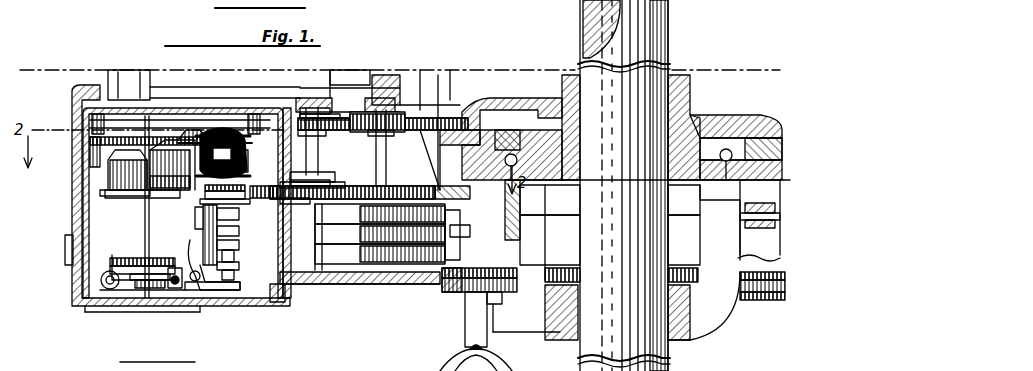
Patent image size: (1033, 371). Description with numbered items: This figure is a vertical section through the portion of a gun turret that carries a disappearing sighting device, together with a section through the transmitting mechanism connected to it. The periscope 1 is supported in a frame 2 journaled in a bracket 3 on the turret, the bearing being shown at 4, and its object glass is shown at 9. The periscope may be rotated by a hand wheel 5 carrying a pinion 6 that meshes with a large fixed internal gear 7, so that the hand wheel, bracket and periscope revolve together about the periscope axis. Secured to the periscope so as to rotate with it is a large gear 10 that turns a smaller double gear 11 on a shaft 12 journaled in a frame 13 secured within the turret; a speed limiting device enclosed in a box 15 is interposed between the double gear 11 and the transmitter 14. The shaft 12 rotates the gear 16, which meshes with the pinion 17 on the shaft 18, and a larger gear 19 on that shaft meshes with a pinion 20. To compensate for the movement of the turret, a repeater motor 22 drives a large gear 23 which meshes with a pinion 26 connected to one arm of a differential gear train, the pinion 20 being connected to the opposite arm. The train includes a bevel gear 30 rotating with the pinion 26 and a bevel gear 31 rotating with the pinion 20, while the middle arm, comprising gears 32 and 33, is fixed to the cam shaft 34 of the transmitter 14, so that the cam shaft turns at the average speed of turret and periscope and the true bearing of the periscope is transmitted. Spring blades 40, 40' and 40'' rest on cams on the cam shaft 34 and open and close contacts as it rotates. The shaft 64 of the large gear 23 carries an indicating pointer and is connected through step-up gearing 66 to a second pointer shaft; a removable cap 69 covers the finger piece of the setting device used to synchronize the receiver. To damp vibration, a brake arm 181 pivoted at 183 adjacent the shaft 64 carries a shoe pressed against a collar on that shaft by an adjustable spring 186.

The periscope 1 is at (670, 66).
The frame 2 is at (690, 95).
The bracket 3 is at (493, 108).
The bearing 4 is at (514, 153).
The hand wheel 5 is at (515, 370).
The pinion 6 is at (466, 278).
The fixed internal gear 7 is at (755, 300).
The object glass 9 is at (584, 28).
The large gear 10 is at (762, 222).
The double gear 11 is at (444, 203).
The shaft 12 is at (384, 165).
The frame 13 is at (400, 284).
The transmitter 14 is at (185, 226).
The box 15 is at (352, 255).
The gear 16 is at (410, 130).
The pinion 17 is at (290, 125).
The shaft 18 is at (320, 150).
The larger gear 19 is at (272, 188).
The pinion 20 is at (147, 193).
The repeater motor 22 is at (118, 172).
The large gear 23 is at (92, 146).
The pinion 26 is at (213, 135).
The bevel gear 30 is at (247, 140).
The bevel gear 31 is at (234, 197).
The gear 32 is at (248, 160).
The gear 33 is at (173, 165).
The cam shaft 34 is at (222, 287).
The spring blade 40 is at (228, 235).
The spring blade 40' is at (241, 249).
The spring blade 40'' is at (243, 269).
The shaft 64 is at (148, 230).
The step-up gearing 66 is at (112, 262).
The removable cap 69 is at (162, 355).
The arm 181 is at (132, 290).
The pivot 183 is at (175, 292).
The spring 186 is at (86, 300).